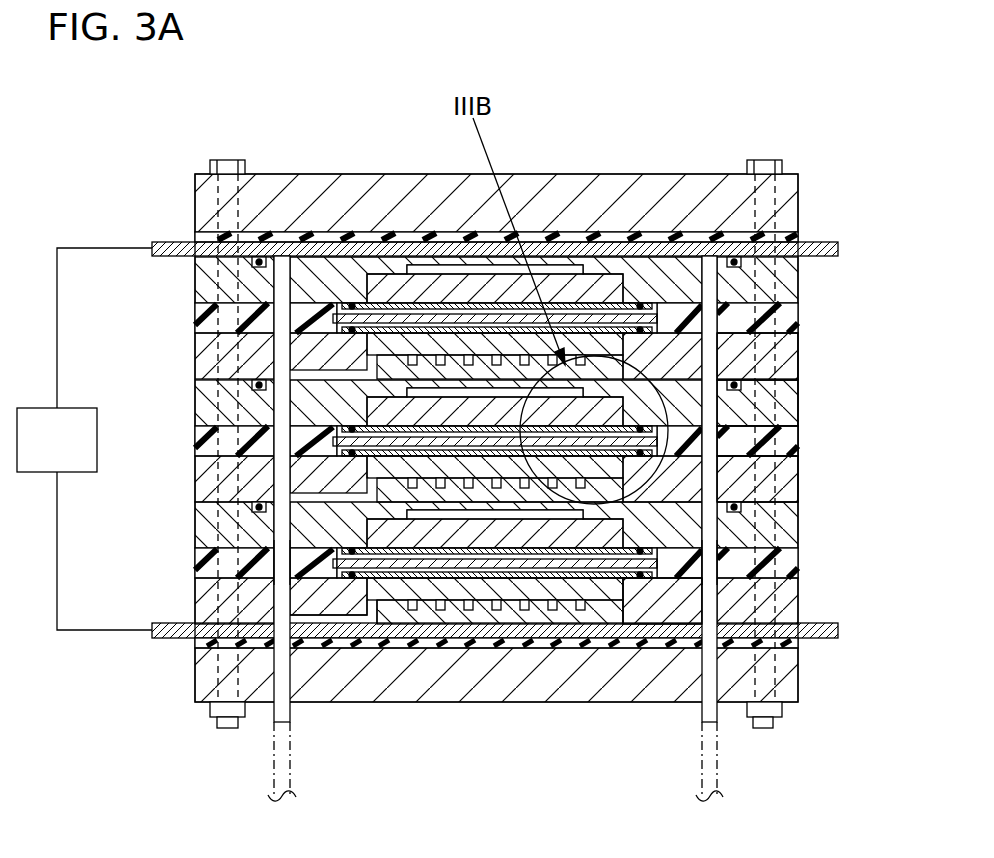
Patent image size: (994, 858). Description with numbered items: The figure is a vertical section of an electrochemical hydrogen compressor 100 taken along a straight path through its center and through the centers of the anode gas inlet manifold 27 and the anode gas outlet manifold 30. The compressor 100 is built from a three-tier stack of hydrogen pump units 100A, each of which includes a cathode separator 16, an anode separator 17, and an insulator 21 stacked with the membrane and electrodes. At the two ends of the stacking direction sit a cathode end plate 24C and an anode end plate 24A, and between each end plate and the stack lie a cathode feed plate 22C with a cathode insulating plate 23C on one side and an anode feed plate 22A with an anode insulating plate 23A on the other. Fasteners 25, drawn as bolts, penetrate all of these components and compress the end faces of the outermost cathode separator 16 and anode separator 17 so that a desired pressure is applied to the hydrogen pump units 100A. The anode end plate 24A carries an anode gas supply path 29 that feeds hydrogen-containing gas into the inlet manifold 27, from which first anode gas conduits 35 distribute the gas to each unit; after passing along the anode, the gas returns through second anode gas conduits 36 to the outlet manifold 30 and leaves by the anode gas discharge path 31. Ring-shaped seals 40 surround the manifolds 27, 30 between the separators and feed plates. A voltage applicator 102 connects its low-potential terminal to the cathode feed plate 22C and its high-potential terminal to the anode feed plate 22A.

The electrochemical hydrogen compressor 100 is at (345, 67).
The hydrogen pump unit 100A is at (190, 380).
The voltage applicator 102 is at (38, 453).
The cathode separator 16 is at (785, 407).
The anode separator 17 is at (786, 478).
The insulator 21 is at (788, 440).
The anode feed plate 22A is at (838, 632).
The cathode feed plate 22C is at (838, 248).
The anode insulating plate 23A is at (788, 643).
The cathode insulating plate 23C is at (790, 237).
The anode end plate 24A is at (787, 678).
The cathode end plate 24C is at (787, 198).
The fastener 25 is at (224, 160).
The anode gas inlet manifold 27 is at (283, 557).
The anode gas supply path 29 is at (292, 757).
The anode gas outlet manifold 30 is at (708, 567).
The anode gas discharge path 31 is at (697, 757).
The first anode gas conduit 35 is at (362, 620).
The second anode gas conduit 36 is at (630, 620).
The seal 40 is at (785, 363).